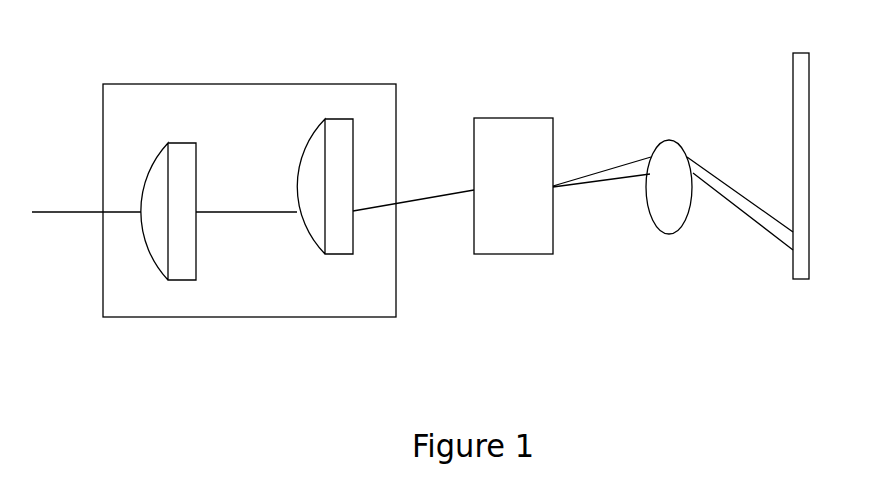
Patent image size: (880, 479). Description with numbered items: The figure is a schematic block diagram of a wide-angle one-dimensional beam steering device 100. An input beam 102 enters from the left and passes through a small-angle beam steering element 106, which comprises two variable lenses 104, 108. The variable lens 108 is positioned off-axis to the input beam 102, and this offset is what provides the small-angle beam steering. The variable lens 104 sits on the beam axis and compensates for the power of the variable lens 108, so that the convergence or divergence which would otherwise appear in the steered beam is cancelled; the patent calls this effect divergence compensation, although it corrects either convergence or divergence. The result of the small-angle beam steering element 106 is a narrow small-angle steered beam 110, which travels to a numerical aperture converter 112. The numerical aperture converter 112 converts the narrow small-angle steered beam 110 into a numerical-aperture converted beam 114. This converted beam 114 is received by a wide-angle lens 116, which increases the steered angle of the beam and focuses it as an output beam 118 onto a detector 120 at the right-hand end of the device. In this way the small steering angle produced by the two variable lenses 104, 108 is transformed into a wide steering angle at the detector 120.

The wide-angle 1D beam steering device 100 is at (472, 343).
The input beam 102 is at (164, 226).
The variable lens 104 is at (168, 194).
The small-angle beam steering element 106 is at (249, 200).
The variable lens 108 is at (325, 172).
The small-angle steered beam 110 is at (413, 210).
The numerical aperture converter 112 is at (513, 167).
The N.A. converted beam 114 is at (602, 188).
The wide-angle lens 116 is at (670, 170).
The output beam 118 is at (740, 223).
The detector 120 is at (795, 150).